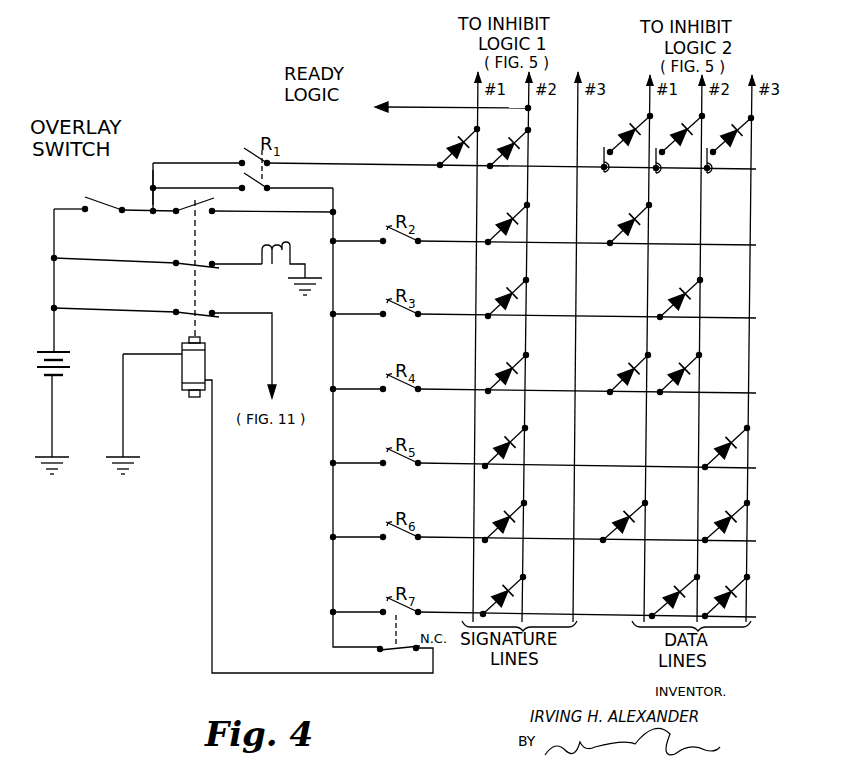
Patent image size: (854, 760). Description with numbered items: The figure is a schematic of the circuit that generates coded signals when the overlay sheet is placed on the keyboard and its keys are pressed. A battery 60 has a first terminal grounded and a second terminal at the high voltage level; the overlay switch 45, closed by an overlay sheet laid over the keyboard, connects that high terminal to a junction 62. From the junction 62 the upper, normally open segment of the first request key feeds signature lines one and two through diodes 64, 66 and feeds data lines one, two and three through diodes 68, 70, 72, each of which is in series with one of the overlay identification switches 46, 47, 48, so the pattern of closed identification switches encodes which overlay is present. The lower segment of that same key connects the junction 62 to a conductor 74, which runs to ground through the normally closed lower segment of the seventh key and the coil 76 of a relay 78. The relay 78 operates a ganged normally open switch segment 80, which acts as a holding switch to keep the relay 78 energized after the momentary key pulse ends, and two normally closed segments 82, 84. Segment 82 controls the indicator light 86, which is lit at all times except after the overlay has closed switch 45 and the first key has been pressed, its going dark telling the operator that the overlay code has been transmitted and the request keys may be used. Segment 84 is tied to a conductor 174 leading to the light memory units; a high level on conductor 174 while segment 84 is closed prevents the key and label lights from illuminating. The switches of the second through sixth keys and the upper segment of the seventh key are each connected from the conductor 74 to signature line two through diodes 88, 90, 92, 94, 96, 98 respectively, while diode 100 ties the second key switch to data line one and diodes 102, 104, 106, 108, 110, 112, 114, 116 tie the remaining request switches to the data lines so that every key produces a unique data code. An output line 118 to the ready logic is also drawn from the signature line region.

The overlay switch 45 is at (104, 201).
The junction 62 is at (152, 200).
The switch segment 80 is at (193, 201).
The switch segment 82 is at (190, 260).
The switch segment 84 is at (190, 309).
The indicator light 86 is at (279, 253).
The battery 60 is at (58, 350).
The coil 76 is at (178, 385).
The relay 78 is at (176, 382).
The conductor 174 is at (275, 363).
The conductor 74 is at (333, 507).
The ready logic output line 118 is at (447, 107).
The diode 64 is at (453, 147).
The diode 66 is at (503, 146).
The diode 68 is at (625, 133).
The diode 70 is at (683, 133).
The diode 72 is at (731, 135).
The overlay identification switch 46 is at (605, 170).
The overlay identification switch 47 is at (658, 170).
The overlay identification switch 48 is at (709, 170).
The diode 88 is at (501, 218).
The diode 90 is at (501, 293).
The diode 92 is at (501, 368).
The diode 94 is at (499, 441).
The diode 96 is at (497, 514).
The diode 98 is at (497, 586).
The diode 100 is at (623, 221).
The diode 102 is at (673, 294).
The diode 104 is at (621, 368).
The diode 106 is at (673, 368).
The diode 108 is at (719, 441).
The diode 110 is at (615, 514).
The diode 112 is at (719, 514).
The diode 114 is at (667, 586).
The diode 116 is at (719, 586).